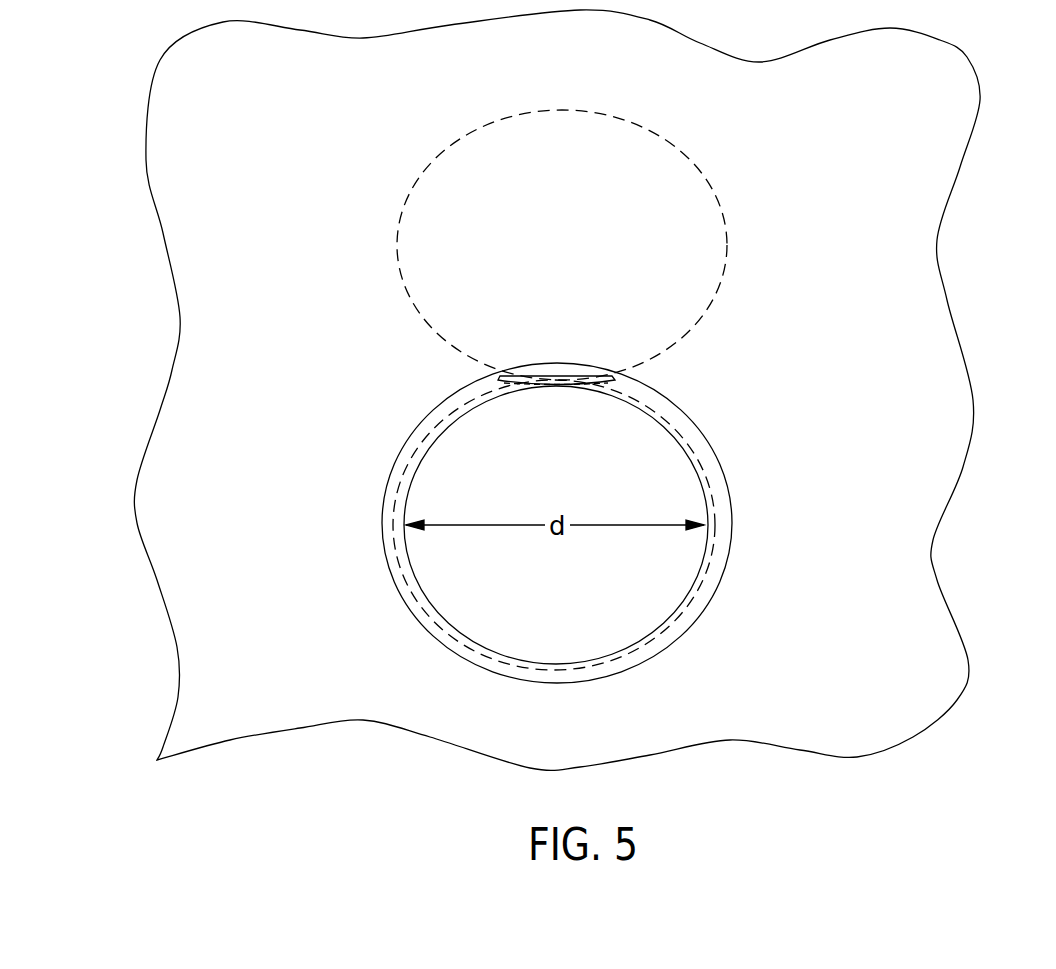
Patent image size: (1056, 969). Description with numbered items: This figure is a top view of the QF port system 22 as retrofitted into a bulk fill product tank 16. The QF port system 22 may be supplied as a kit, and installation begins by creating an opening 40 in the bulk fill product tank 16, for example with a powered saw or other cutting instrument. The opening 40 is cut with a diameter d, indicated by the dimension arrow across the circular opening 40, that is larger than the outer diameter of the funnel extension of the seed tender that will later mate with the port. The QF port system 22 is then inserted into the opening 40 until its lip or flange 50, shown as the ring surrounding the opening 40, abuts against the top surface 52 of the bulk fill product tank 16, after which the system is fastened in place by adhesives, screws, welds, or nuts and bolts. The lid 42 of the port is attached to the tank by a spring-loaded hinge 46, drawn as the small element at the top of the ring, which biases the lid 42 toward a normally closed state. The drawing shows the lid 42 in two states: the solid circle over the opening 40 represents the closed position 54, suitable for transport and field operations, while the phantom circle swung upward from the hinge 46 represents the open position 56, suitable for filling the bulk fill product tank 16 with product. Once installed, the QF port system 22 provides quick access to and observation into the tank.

The bulk fill product tank 16 is at (948, 77).
The QF port system 22 is at (797, 352).
The opening 40 is at (659, 625).
The lid 42 is at (580, 110).
The spring-loaded hinge 46 is at (556, 377).
The lip or flange 50 is at (691, 420).
The top surface 52 is at (827, 161).
The closed position 54 is at (744, 595).
The open position 56 is at (740, 252).